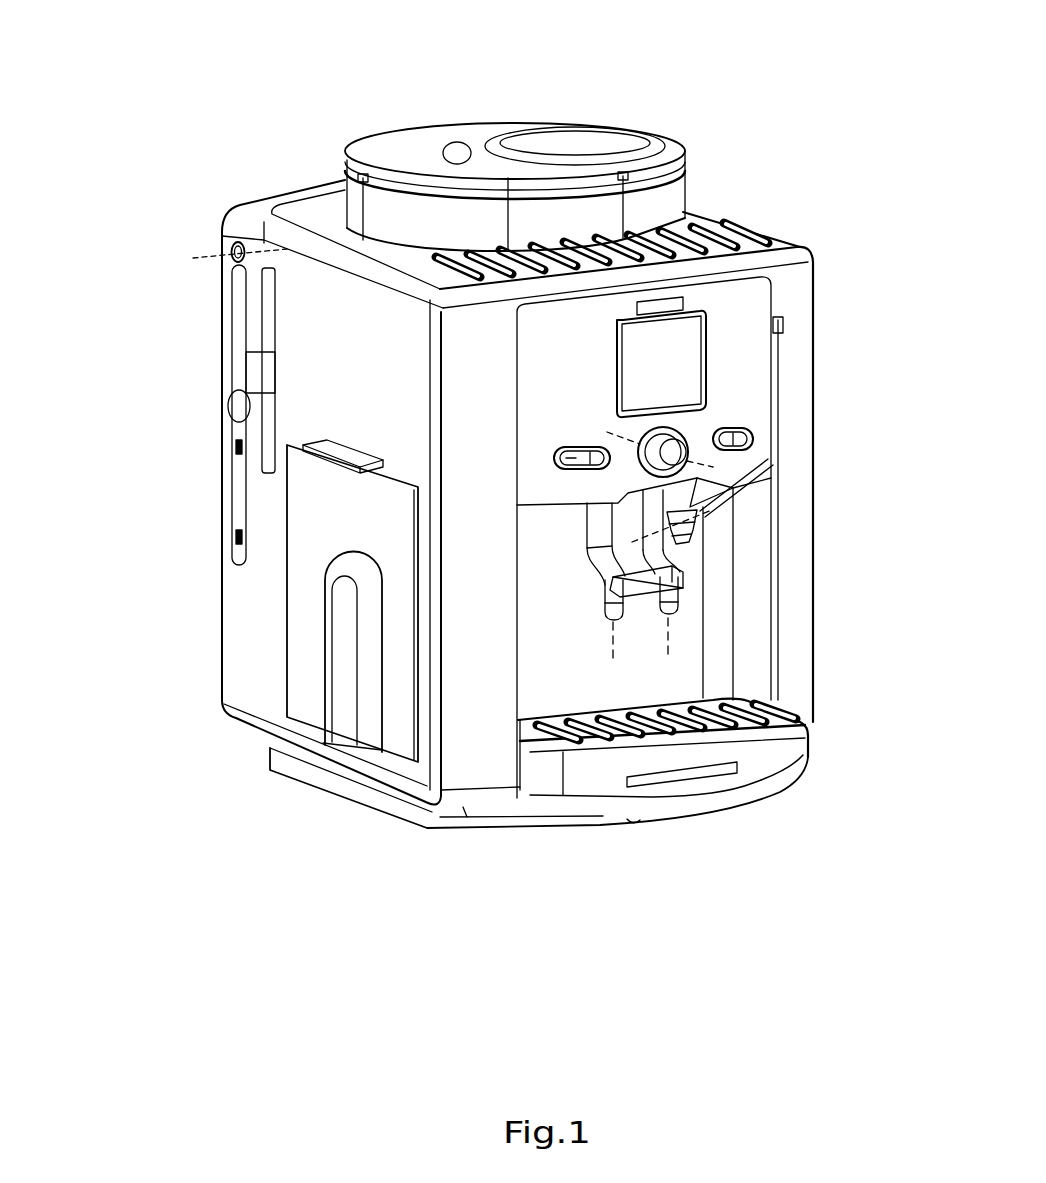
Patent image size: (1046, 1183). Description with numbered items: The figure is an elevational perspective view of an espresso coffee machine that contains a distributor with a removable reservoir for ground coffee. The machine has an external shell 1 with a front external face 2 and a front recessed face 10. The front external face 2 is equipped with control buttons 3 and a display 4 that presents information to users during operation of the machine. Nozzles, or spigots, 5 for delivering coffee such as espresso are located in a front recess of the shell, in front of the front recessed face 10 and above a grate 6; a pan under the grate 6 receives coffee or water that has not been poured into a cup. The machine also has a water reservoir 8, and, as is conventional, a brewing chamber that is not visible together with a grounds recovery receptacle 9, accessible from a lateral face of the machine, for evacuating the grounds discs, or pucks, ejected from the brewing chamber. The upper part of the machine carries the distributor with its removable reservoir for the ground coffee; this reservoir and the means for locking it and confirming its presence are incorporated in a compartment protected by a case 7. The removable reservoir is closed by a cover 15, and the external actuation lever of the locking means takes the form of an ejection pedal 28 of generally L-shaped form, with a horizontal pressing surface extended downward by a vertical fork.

The external shell 1 is at (790, 277).
The front external face 2 is at (742, 322).
The control buttons 3 is at (748, 425).
The display 4 is at (667, 380).
The nozzles 5 is at (588, 613).
The grate 6 is at (730, 708).
The case 7 is at (595, 210).
The water reservoir 8 is at (230, 275).
The grounds recovery receptacle 9 is at (313, 540).
The front recessed face 10 is at (592, 640).
The cover 15 is at (585, 137).
The ejection pedal 28 is at (417, 153).